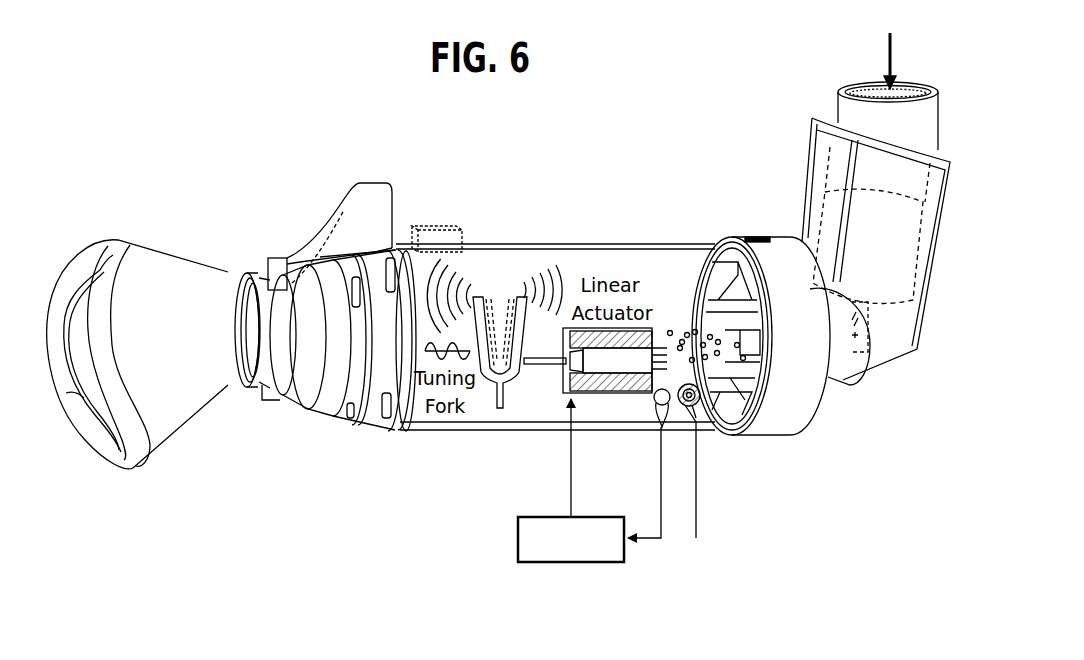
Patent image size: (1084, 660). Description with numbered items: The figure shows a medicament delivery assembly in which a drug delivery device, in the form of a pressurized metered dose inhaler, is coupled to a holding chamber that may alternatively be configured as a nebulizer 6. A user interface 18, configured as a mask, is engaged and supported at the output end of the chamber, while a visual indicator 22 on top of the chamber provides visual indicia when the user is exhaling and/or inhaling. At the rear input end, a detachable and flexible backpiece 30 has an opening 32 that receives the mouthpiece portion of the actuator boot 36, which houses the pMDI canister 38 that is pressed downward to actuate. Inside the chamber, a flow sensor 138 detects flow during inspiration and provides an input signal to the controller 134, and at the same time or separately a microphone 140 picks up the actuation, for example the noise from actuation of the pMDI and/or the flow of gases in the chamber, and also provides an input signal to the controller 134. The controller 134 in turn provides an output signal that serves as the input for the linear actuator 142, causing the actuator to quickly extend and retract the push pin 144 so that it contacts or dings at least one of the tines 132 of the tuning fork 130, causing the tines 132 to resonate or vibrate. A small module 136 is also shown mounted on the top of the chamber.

The nebulizer 6 is at (932, 278).
The user interface 18 is at (187, 430).
The visual indicator 22 is at (357, 205).
The backpiece 30 is at (796, 418).
The opening 32 is at (748, 339).
The actuator boot 36 is at (923, 332).
The pMDI canister 38 is at (914, 92).
The tuning fork 130 is at (498, 386).
The tines 132 is at (516, 318).
The controller 134 is at (562, 562).
The sensor module 136 is at (438, 226).
The flow sensor 138 is at (640, 497).
The microphone 140 is at (718, 485).
The linear actuator 142 is at (664, 330).
The push pin 144 is at (544, 368).